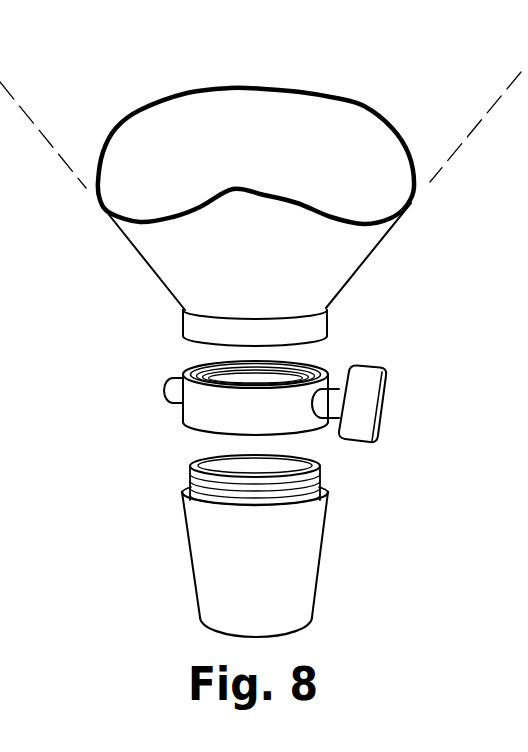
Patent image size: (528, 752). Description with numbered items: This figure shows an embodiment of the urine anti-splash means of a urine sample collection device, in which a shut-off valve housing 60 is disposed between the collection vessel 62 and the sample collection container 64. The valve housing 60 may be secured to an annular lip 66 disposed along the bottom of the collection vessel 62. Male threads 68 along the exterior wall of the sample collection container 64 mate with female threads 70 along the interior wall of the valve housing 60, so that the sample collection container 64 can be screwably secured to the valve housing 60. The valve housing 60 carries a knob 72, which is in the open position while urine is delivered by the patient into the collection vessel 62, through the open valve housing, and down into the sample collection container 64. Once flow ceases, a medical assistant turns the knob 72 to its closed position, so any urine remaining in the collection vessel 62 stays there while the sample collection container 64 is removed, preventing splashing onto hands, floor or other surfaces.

The valve housing 60 is at (191, 407).
The collection vessel 62 is at (176, 265).
The sample collection container 64 is at (213, 573).
The annular lip 66 is at (317, 321).
The male threads 68 is at (321, 474).
The female threads 70 is at (216, 372).
The knob 72 is at (367, 395).